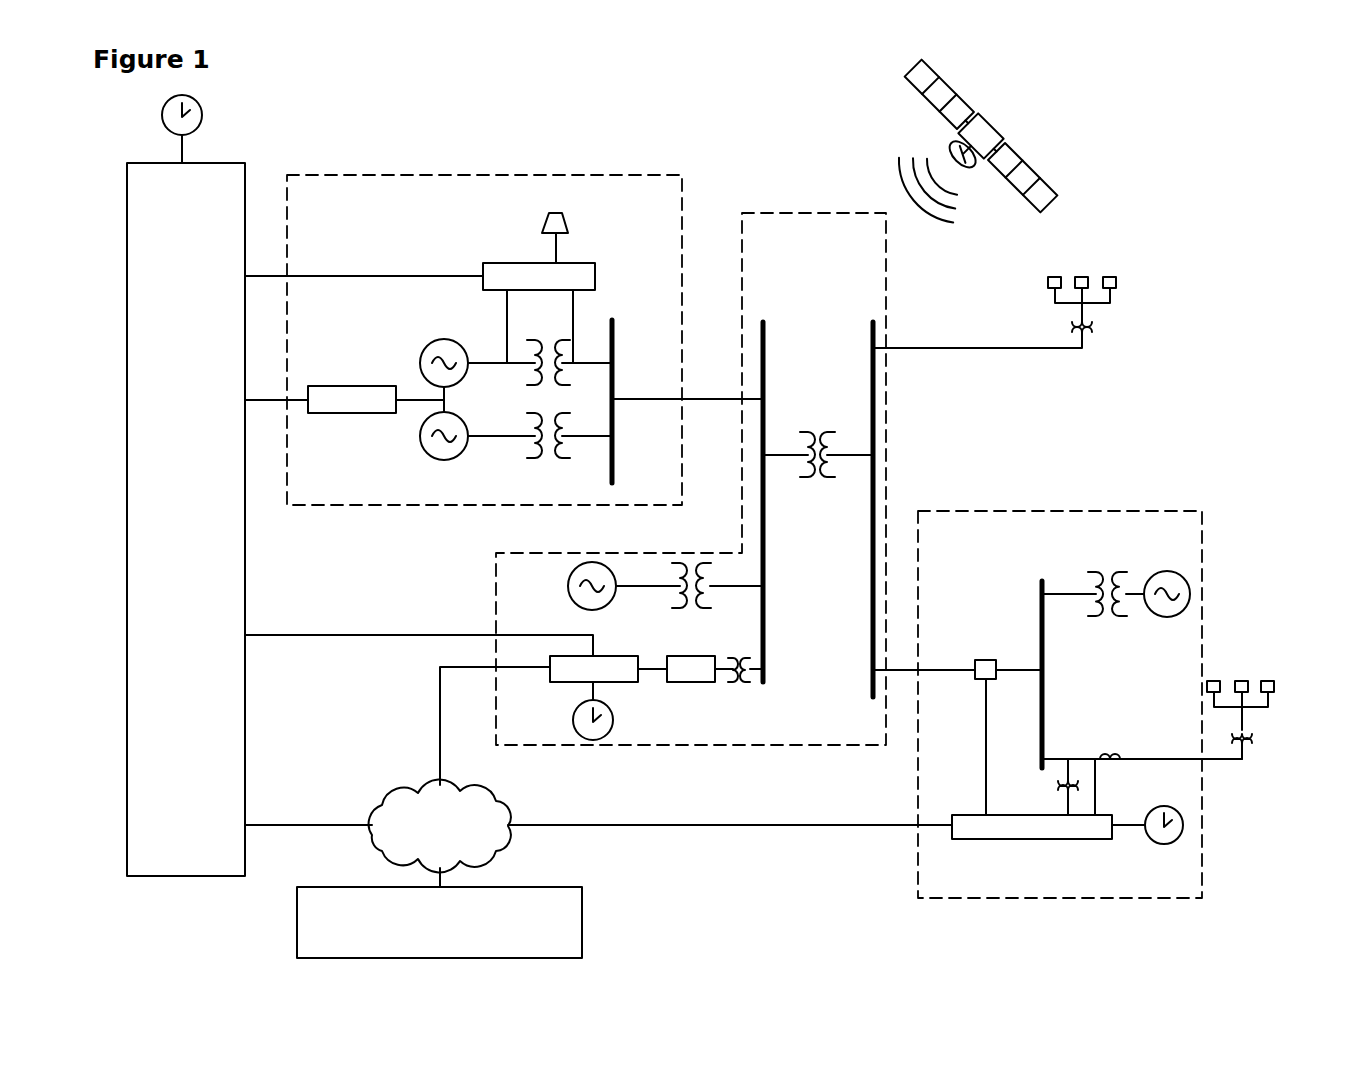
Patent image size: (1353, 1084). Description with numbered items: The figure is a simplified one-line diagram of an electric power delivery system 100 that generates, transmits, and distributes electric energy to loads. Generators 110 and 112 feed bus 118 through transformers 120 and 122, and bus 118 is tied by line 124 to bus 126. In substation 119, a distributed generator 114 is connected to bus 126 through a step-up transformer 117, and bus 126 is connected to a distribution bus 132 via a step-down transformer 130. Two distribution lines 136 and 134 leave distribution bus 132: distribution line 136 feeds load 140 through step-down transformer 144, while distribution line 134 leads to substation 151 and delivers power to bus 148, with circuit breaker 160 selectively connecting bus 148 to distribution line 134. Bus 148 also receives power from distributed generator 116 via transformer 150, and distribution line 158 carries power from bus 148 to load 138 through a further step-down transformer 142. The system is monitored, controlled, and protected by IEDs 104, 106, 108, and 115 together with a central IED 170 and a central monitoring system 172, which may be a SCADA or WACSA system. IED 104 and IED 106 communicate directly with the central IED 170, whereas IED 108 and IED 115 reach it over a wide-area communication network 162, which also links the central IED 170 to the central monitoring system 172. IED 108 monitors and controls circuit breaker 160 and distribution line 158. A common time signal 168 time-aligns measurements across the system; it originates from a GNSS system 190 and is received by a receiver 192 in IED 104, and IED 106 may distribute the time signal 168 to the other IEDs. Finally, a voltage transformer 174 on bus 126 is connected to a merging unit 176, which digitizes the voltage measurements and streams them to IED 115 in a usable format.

The electric power delivery system 100 is at (1210, 185).
The IED 104 is at (518, 263).
The IED 106 is at (335, 413).
The IED 108 is at (1078, 839).
The generator 110 is at (420, 364).
The generator 112 is at (420, 436).
The generator 114 is at (568, 590).
The IED 115 is at (560, 682).
The distributed generator 116 is at (1158, 617).
The step-up transformer 117 is at (680, 607).
The bus 118 is at (615, 470).
The substation 119 is at (496, 586).
The transformer 120 is at (530, 383).
The transformer 122 is at (540, 458).
The line 124 is at (715, 400).
The bus 126 is at (766, 535).
The step-down transformer 130 is at (808, 432).
The distribution bus 132 is at (872, 660).
The distribution line 134 is at (958, 671).
The distribution line 136 is at (990, 349).
The load 138 is at (1252, 680).
The load 140 is at (1118, 282).
The step-down transformer 142 is at (1252, 742).
The step-down transformer 144 is at (1096, 328).
The bus 148 is at (1040, 584).
The transformer 150 is at (1098, 572).
The substation 151 is at (1140, 898).
The distribution line 158 is at (1143, 758).
The circuit breaker 160 is at (984, 660).
The communication network 162 is at (440, 826).
The common time signal 168 is at (203, 113).
The central IED 170 is at (186, 519).
The central monitoring system 172 is at (439, 922).
The voltage transformer 174 is at (740, 682).
The merging unit 176 is at (690, 682).
The GNSS system 190 is at (1003, 128).
The receiver 192 is at (566, 224).